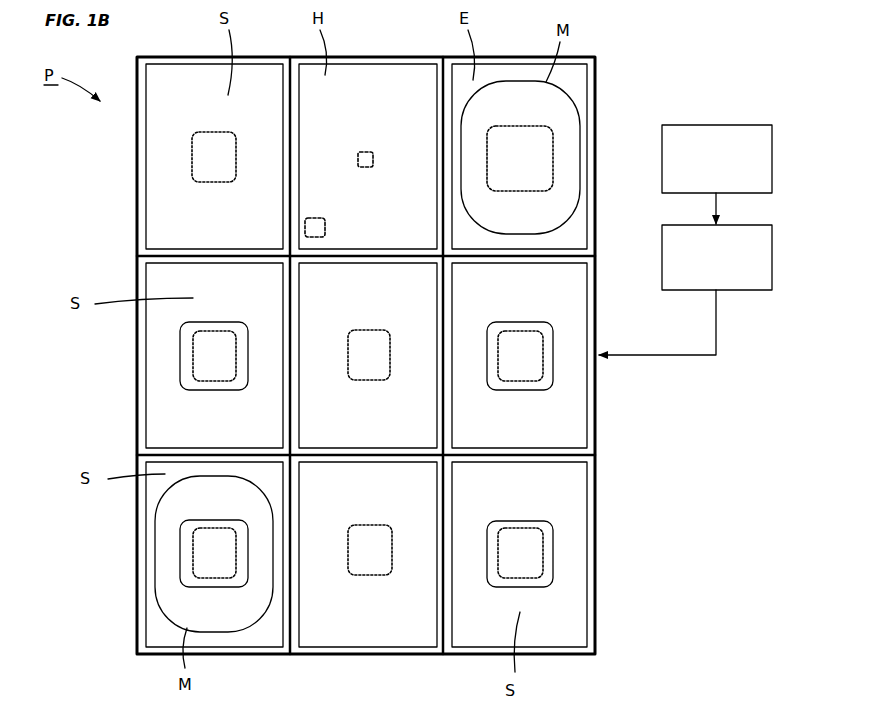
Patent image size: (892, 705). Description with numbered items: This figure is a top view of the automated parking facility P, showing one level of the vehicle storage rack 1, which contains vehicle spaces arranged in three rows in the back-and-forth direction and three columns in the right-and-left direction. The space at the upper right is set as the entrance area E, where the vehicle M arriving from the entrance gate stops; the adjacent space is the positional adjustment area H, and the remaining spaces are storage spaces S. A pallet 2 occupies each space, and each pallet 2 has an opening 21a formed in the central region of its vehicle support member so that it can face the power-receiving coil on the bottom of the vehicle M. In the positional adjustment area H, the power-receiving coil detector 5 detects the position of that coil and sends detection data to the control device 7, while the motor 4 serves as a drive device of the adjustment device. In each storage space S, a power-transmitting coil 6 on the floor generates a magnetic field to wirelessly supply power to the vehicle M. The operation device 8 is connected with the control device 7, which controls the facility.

The vehicle storage rack 1 is at (137, 215).
The pallet 2 is at (587, 92).
The motor 4 is at (313, 216).
The power-receiving coil detector 5 is at (364, 150).
The power-transmitting coil 6 is at (192, 160).
The control device 7 is at (752, 292).
The operation device 8 is at (718, 124).
The opening 21a is at (555, 157).